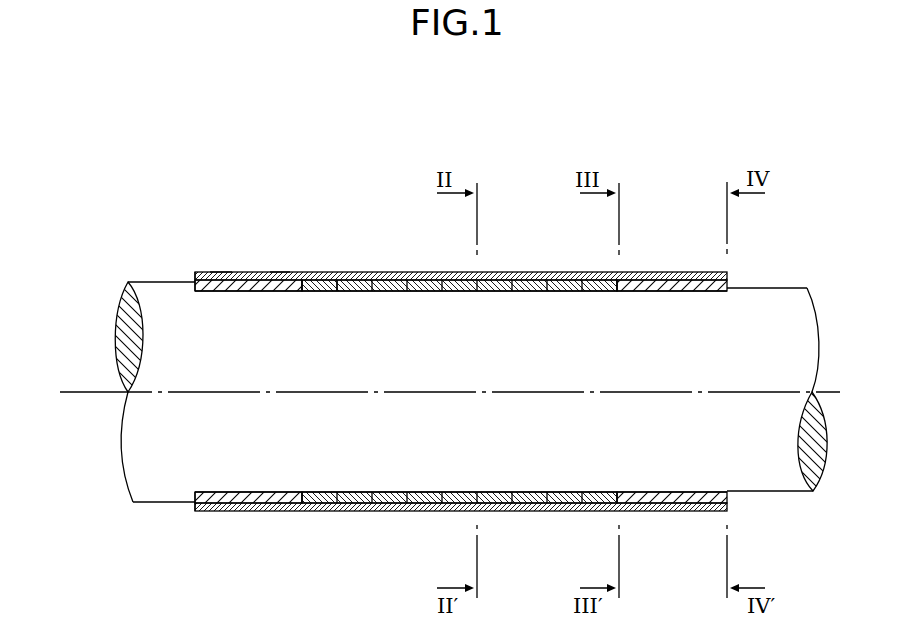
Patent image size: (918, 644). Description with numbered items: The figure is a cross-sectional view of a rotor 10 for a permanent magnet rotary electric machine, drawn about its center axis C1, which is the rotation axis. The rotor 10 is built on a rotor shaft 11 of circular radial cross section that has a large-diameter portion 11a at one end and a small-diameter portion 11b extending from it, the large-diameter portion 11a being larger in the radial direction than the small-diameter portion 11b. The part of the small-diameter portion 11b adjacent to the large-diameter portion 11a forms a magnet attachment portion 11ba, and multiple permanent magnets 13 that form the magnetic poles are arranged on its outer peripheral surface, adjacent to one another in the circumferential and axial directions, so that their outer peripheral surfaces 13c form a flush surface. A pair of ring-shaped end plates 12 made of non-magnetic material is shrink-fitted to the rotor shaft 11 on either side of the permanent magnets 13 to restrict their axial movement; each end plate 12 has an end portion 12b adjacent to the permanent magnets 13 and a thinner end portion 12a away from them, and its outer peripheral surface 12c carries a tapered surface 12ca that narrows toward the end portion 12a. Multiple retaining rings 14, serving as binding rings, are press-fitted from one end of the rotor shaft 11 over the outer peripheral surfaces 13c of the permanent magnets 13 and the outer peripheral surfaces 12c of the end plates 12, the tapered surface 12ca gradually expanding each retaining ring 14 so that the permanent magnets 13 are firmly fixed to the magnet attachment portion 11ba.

The rotor 10 is at (804, 196).
The rotor shaft 11 is at (785, 268).
The large-diameter portion 11a is at (151, 280).
The small-diameter portion 11b is at (753, 287).
The magnet attachment portion 11ba is at (532, 272).
The end plate 12 is at (248, 264).
The end portion 12a is at (193, 286).
The end portion 12b is at (308, 272).
The outer peripheral surface 12c is at (280, 271).
The tapered surface 12ca is at (221, 271).
The permanent magnet 13 is at (358, 264).
The outer peripheral surface 13c is at (332, 271).
The retaining ring 14 is at (412, 264).
The center axis C1 is at (87, 392).